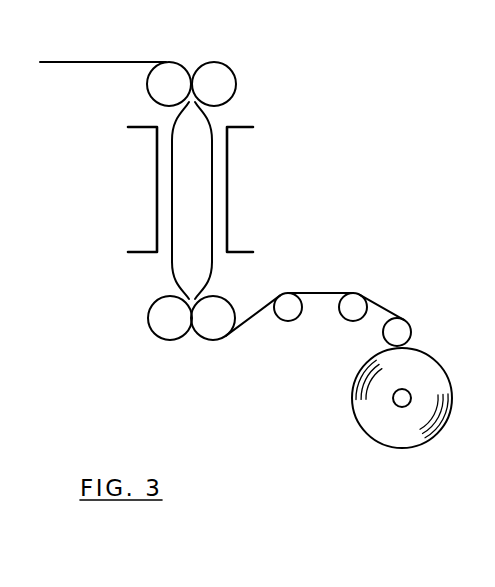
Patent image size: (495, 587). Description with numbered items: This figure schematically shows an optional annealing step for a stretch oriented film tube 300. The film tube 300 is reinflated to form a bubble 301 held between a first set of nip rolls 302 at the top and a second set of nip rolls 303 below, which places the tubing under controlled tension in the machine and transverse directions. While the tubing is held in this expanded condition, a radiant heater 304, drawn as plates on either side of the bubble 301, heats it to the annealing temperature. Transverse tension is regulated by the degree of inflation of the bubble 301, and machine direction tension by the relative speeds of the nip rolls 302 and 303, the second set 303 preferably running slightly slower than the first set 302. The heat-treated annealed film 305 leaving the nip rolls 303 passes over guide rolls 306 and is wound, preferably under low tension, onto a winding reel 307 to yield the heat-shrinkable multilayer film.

The stretch oriented film tube 300 is at (93, 62).
The bubble 301 is at (172, 272).
The first set of nip rolls 302 is at (222, 77).
The second set of nip rolls 303 is at (215, 335).
The radiant heater 304 is at (228, 195).
The heat-treated annealed film 305 is at (252, 320).
The guide rolls 306 is at (288, 303).
The winding reel 307 is at (385, 422).